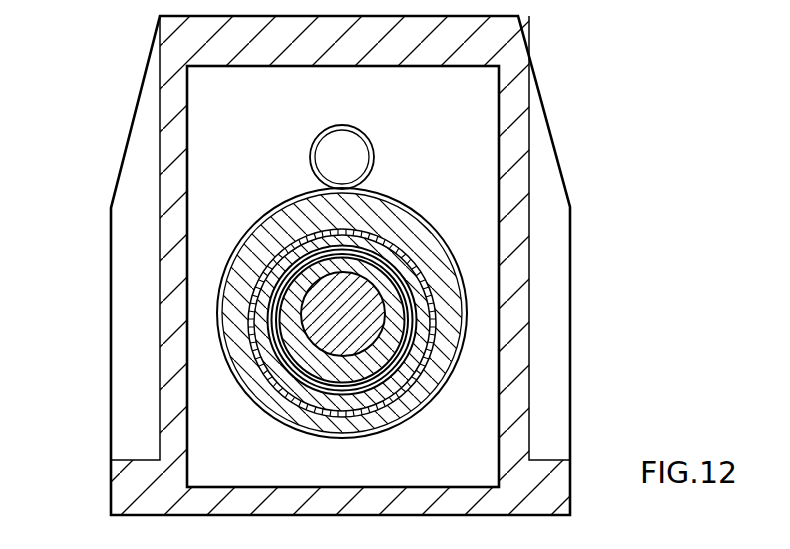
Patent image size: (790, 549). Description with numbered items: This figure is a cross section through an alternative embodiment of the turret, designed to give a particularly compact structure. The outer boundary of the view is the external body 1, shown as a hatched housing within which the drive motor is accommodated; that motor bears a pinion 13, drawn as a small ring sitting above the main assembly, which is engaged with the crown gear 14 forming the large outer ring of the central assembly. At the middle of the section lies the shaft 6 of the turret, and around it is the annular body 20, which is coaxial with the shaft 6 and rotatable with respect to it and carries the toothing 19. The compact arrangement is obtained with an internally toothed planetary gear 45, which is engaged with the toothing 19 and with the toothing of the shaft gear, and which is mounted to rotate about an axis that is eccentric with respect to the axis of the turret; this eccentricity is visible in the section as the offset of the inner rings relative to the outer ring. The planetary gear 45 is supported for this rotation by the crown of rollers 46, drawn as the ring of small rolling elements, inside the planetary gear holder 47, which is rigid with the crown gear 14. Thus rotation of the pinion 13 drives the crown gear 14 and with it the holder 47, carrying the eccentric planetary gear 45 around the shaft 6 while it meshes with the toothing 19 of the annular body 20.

The external body 1 is at (146, 492).
The shaft 6 is at (375, 293).
The pinion 13 is at (353, 150).
The crown gear 14 is at (400, 199).
The toothing 19 is at (297, 360).
The annular body 20 is at (290, 325).
The internally toothed planetary gear 45 is at (395, 241).
The crown of rollers 46 is at (410, 387).
The planetary gear holder 47 is at (432, 358).